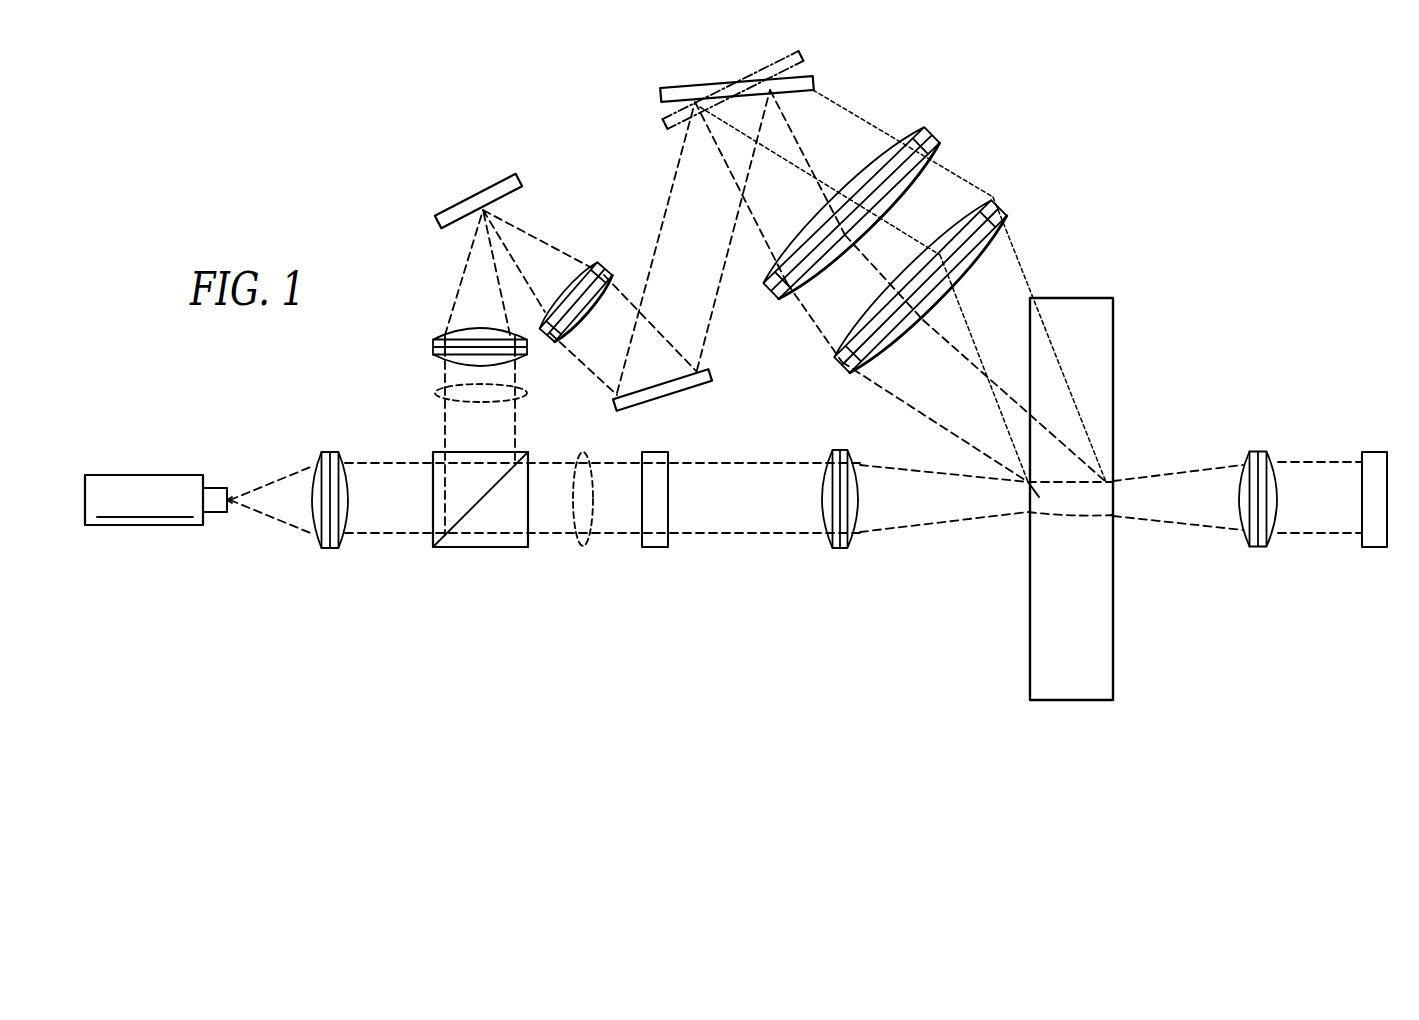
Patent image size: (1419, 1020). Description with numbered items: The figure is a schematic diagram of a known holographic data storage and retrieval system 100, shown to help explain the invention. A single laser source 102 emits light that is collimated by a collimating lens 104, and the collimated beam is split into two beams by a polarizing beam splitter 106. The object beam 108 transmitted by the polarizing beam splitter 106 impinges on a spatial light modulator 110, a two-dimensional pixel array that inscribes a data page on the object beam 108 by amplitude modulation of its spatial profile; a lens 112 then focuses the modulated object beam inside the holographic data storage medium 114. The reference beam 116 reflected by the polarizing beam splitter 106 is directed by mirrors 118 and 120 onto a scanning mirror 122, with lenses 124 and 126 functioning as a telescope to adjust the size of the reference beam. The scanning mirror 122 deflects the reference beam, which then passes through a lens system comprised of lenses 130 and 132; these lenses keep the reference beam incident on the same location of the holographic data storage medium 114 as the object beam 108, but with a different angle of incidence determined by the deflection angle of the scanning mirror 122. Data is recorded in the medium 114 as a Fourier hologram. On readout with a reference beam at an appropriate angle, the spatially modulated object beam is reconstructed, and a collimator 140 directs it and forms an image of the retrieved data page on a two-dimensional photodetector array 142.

The holographic data storage and retrieval system 100 is at (1202, 317).
The laser source 102 is at (145, 473).
The collimating lens 104 is at (330, 550).
The polarizing beam splitter 106 is at (480, 548).
The object beam 108 is at (583, 548).
The spatial light modulator 110 is at (655, 548).
The lens 112 is at (838, 548).
The holographic data storage medium 114 is at (1073, 297).
The reference beam 116 is at (435, 393).
The mirror 118 is at (457, 205).
The mirror 120 is at (713, 377).
The scanning mirror 122 is at (813, 80).
The lens 124 is at (433, 347).
The lens 126 is at (600, 268).
The lens 130 is at (937, 135).
The lens 132 is at (1007, 203).
The collimator 140 is at (1258, 450).
The photodetector array 142 is at (1373, 450).